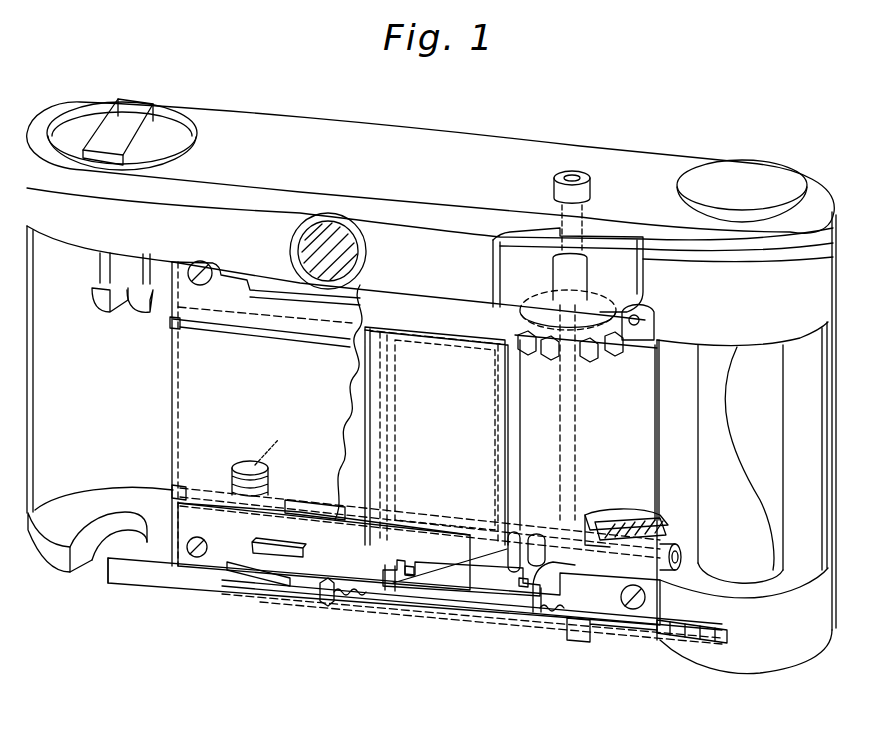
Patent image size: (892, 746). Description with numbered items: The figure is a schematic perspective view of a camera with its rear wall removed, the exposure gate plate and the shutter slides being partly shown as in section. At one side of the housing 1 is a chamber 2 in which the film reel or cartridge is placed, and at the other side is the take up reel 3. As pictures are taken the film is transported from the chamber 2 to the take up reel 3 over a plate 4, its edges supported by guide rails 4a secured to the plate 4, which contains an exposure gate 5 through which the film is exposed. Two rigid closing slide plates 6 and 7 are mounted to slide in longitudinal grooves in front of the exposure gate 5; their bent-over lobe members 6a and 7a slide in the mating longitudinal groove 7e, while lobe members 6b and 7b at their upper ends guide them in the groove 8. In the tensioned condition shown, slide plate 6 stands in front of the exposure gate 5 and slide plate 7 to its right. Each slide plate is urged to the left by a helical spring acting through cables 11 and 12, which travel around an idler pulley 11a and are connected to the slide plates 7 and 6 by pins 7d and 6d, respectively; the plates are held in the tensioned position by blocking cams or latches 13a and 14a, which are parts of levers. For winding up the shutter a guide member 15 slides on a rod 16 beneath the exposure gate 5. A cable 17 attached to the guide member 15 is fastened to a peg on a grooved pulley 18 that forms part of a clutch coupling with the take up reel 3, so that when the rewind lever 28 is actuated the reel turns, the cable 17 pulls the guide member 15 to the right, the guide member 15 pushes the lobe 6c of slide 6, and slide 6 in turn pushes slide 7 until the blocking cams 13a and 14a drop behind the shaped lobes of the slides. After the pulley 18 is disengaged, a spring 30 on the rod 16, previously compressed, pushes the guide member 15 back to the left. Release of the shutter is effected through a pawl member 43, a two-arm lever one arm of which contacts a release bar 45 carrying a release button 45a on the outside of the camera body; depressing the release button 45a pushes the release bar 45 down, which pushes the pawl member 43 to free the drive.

The housing 1 is at (623, 520).
The chamber 2 is at (70, 453).
The take up reel 3 is at (763, 447).
The plate 4 is at (197, 408).
The guide rails 4a is at (200, 327).
The exposure gate 5 is at (405, 362).
The slide plate 6 is at (403, 428).
The lobe member 6a is at (500, 548).
The lobe member 6b is at (438, 343).
The lobe 6c is at (380, 598).
The pin 6d is at (447, 520).
The slide plate 7 is at (633, 443).
The lobe member 7a is at (533, 540).
The lobe member 7b is at (653, 327).
The pin 7d is at (590, 520).
The longitudinal groove 7e is at (227, 503).
The groove 8 is at (504, 334).
The cable 11 is at (285, 505).
The idler pulley 11a is at (240, 468).
The cable 12 is at (304, 500).
The blocking cam 13a is at (408, 575).
The blocking cam 14a is at (522, 587).
The guide member 15 is at (291, 600).
The rod 16 is at (479, 610).
The cable 17 is at (627, 623).
The grooved pulley 18 is at (712, 633).
The rewind lever 28 is at (517, 263).
The spring 30 is at (343, 605).
The pawl member 43 is at (540, 623).
The release bar 45 is at (570, 390).
The release button 45a is at (568, 173).